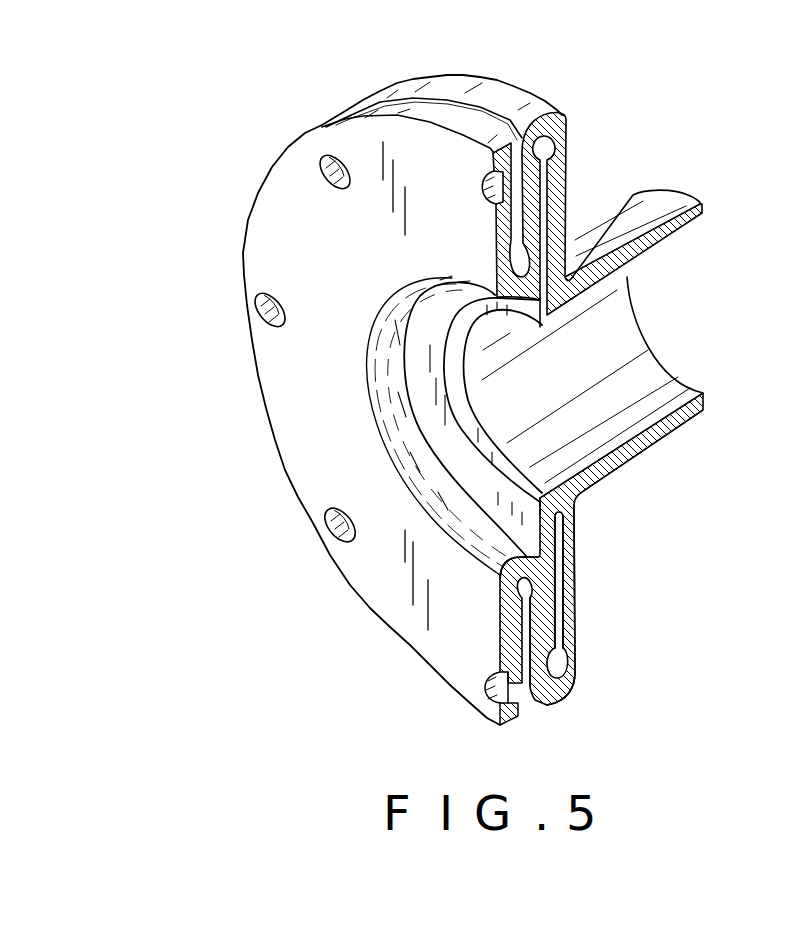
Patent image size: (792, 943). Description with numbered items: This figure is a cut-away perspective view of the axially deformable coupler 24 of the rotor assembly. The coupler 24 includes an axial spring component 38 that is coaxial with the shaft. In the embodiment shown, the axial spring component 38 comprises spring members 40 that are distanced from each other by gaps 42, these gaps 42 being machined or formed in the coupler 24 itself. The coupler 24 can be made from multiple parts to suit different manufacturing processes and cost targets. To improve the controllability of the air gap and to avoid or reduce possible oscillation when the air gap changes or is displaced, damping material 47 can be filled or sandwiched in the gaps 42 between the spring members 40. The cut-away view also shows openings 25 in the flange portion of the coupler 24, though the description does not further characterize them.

The axially deformable coupler 24 is at (480, 422).
The bolt hole 25 is at (330, 535).
The axial spring component 38 is at (558, 700).
The spring members 40 is at (565, 630).
The gaps 42 is at (550, 572).
The damping material 47 is at (525, 628).